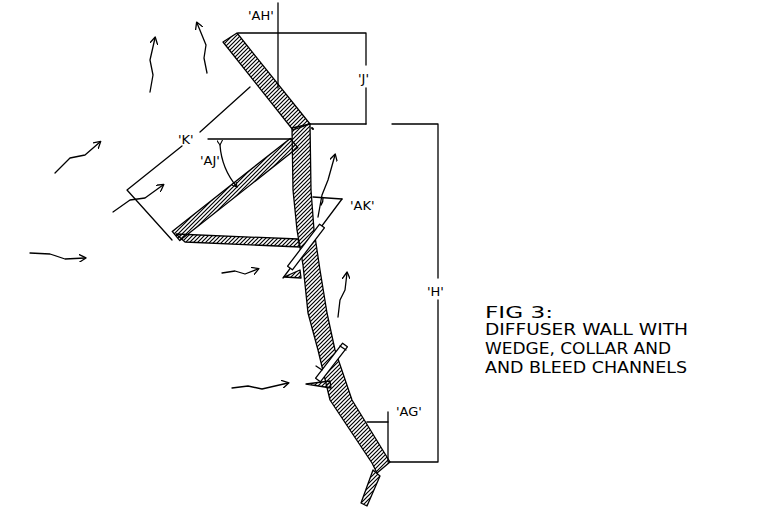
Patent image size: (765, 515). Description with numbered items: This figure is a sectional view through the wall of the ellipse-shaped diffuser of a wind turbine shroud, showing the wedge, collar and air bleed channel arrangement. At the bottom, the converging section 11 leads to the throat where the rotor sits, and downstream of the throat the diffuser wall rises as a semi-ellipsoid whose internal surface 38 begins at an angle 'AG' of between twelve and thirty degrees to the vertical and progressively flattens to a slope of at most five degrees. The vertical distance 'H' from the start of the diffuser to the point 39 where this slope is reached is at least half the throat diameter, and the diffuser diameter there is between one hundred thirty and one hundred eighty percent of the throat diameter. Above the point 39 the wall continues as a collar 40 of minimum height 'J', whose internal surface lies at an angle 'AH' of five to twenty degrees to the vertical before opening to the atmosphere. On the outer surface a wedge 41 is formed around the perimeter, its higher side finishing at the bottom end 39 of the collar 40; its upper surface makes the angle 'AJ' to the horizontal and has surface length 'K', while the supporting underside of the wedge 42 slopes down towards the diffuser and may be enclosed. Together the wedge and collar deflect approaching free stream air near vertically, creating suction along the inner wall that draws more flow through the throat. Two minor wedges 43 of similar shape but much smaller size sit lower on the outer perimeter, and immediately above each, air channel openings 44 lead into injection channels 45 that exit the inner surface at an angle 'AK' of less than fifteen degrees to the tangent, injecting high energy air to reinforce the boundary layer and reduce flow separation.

The converging section 11 is at (378, 488).
The internal surface of the diffuser 38 is at (357, 400).
The point at bottom end of collar 39 is at (312, 128).
The collar 40 is at (280, 81).
The wedge 41 is at (210, 207).
The supporting underside of the wedge 42 is at (238, 236).
The minor wedges 43 is at (286, 274).
The air channel openings 44 is at (320, 368).
The injection channels 45 is at (342, 348).